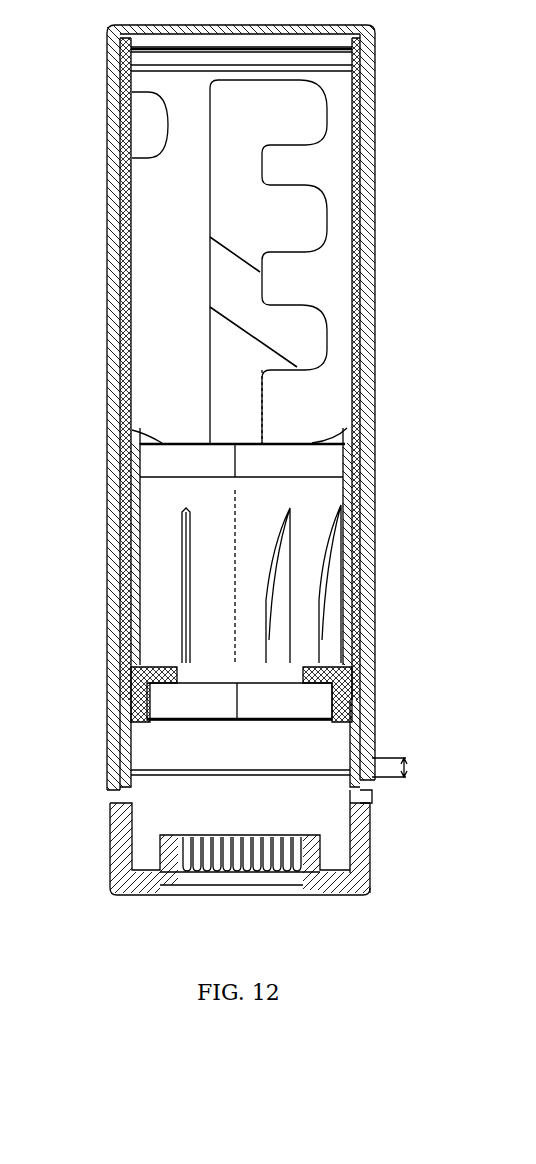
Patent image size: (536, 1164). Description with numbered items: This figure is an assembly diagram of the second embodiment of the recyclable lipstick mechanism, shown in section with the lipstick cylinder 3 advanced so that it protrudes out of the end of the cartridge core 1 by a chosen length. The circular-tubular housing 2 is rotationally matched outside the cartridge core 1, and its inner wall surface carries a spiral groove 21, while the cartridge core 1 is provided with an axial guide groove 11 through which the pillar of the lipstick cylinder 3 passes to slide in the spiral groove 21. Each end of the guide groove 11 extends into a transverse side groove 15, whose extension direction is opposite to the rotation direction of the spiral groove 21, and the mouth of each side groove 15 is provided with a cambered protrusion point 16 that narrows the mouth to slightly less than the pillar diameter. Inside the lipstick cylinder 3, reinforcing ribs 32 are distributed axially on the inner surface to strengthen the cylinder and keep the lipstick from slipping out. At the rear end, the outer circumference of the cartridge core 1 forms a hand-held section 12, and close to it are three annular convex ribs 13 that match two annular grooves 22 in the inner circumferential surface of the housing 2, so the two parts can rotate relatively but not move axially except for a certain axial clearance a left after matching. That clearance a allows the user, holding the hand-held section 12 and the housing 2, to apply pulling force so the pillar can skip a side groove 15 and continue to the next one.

The cartridge core 1 is at (120, 812).
The housing 2 is at (107, 277).
The lipstick cylinder 3 is at (140, 678).
The guide groove 11 is at (237, 408).
The hand-held section 12 is at (370, 833).
The annular convex rib 13 is at (373, 791).
The side groove 15 is at (302, 110).
The protrusion point 16 is at (277, 250).
The spiral groove 21 is at (237, 300).
The annular groove 22 is at (365, 732).
The reinforcing rib 32 is at (325, 597).
The axial clearance a is at (408, 768).